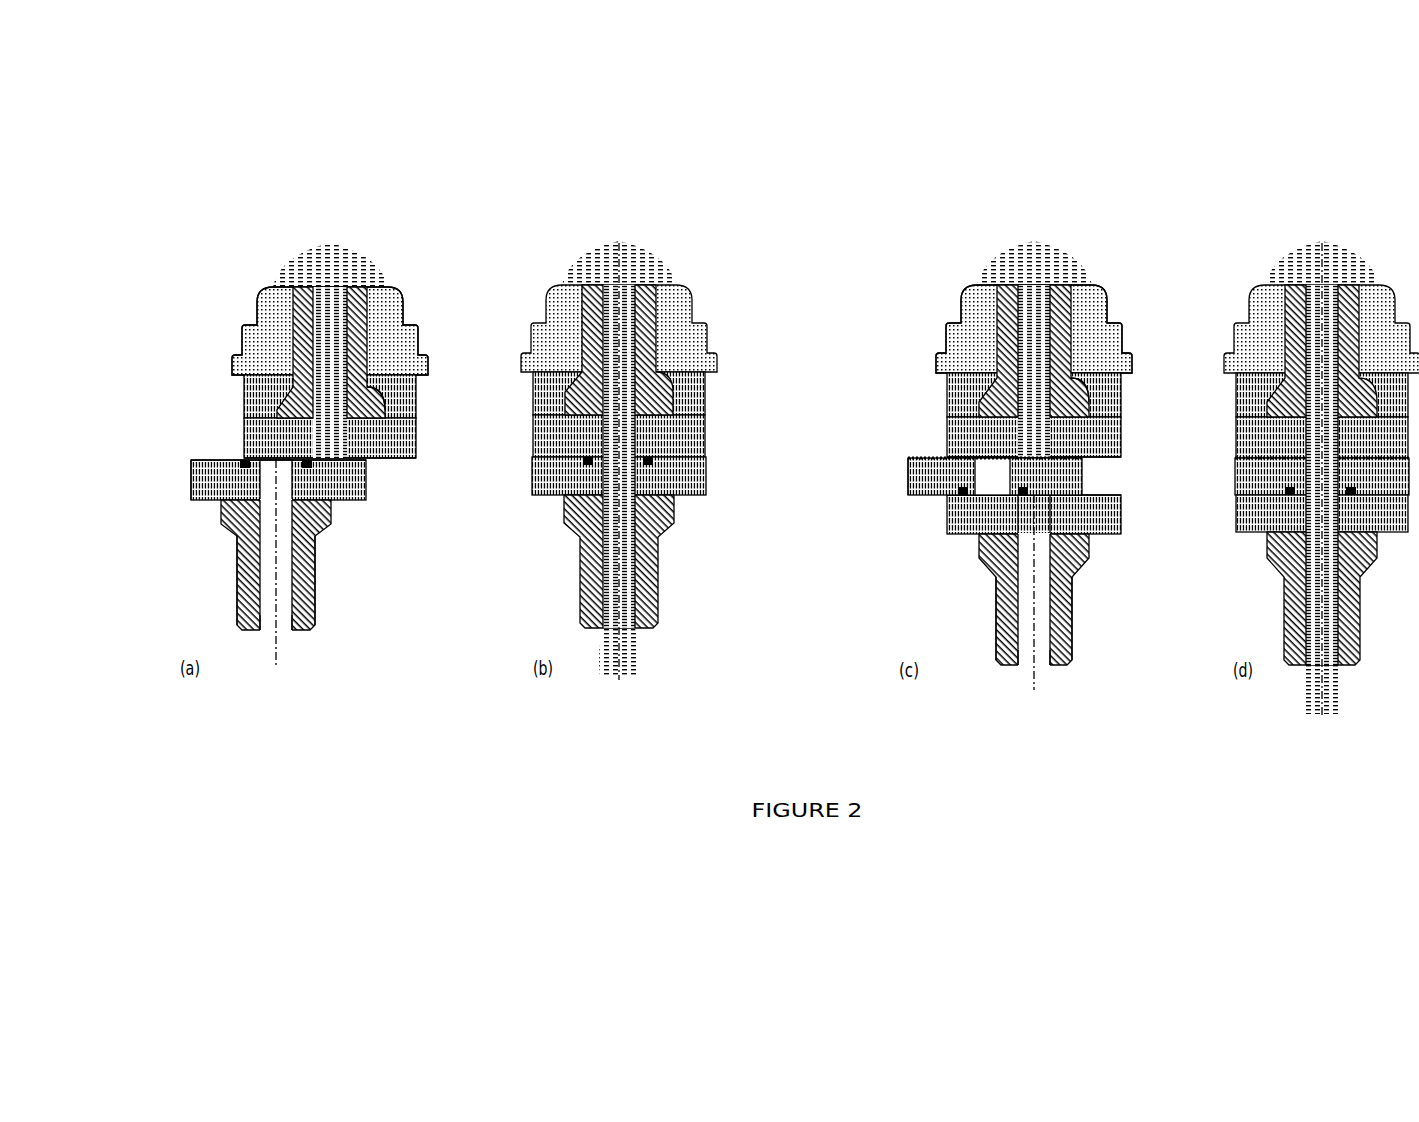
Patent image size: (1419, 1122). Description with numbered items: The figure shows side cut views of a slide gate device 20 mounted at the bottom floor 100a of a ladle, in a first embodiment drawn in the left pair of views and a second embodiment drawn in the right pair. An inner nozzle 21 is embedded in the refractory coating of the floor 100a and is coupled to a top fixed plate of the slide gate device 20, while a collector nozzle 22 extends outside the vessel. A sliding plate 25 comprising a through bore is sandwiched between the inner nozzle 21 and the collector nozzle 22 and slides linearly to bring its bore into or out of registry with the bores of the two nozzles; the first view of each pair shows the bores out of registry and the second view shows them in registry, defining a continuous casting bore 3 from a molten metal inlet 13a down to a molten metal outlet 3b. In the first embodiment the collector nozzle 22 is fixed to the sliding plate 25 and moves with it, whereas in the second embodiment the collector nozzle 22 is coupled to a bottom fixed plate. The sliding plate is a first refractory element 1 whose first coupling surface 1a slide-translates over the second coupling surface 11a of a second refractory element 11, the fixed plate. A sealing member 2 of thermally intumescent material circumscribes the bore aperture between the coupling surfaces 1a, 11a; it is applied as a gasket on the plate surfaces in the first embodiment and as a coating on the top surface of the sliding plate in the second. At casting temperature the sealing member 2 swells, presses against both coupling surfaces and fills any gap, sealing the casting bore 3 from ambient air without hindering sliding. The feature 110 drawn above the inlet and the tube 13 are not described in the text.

The refractory element 1 is at (186, 450).
The first coupling surface 1a is at (219, 460).
The sealing member 2 is at (243, 460).
The casting bore 3 is at (287, 478).
The molten metal outlet 3b is at (280, 632).
The second refractory element 11 is at (424, 446).
The second coupling surface 11a is at (368, 460).
The tube 13 is at (357, 310).
The molten metal inlet 13a is at (323, 287).
The slide gate device 20 is at (248, 266).
The inner nozzle 21 is at (360, 325).
The collector nozzle 22 is at (236, 570).
The sliding plate 25 is at (190, 478).
The bottom floor 100a is at (242, 348).
The fluid 110 is at (362, 265).